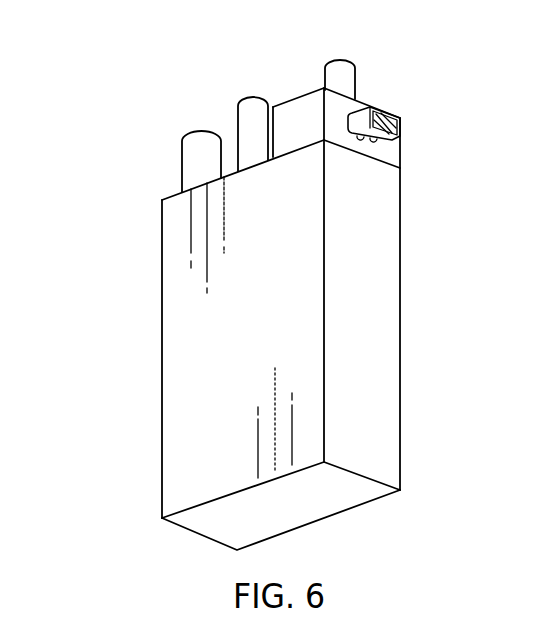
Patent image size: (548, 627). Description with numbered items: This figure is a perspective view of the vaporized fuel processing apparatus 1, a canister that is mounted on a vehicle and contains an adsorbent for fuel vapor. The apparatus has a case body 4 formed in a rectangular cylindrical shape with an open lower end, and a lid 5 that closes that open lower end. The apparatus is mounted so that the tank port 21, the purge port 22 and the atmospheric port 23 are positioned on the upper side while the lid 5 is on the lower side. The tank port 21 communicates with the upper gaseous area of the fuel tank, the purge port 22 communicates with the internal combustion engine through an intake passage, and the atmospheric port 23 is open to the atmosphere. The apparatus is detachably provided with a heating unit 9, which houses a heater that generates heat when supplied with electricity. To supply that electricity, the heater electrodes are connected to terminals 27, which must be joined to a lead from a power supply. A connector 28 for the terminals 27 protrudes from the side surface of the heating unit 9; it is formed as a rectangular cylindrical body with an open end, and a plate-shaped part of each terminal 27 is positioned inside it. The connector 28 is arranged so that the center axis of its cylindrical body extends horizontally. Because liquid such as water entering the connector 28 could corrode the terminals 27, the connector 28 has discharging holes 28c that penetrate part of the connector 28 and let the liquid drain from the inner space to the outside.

The vaporized fuel processing apparatus 1 is at (103, 204).
The case body 4 is at (192, 344).
The lid 5 is at (290, 503).
The heating unit 9 is at (291, 117).
The tank port 21 is at (203, 158).
The purge port 22 is at (254, 118).
The atmospheric port 23 is at (338, 70).
The terminal 27 is at (378, 108).
The connector 28 is at (358, 113).
The discharging hole 28c is at (373, 141).